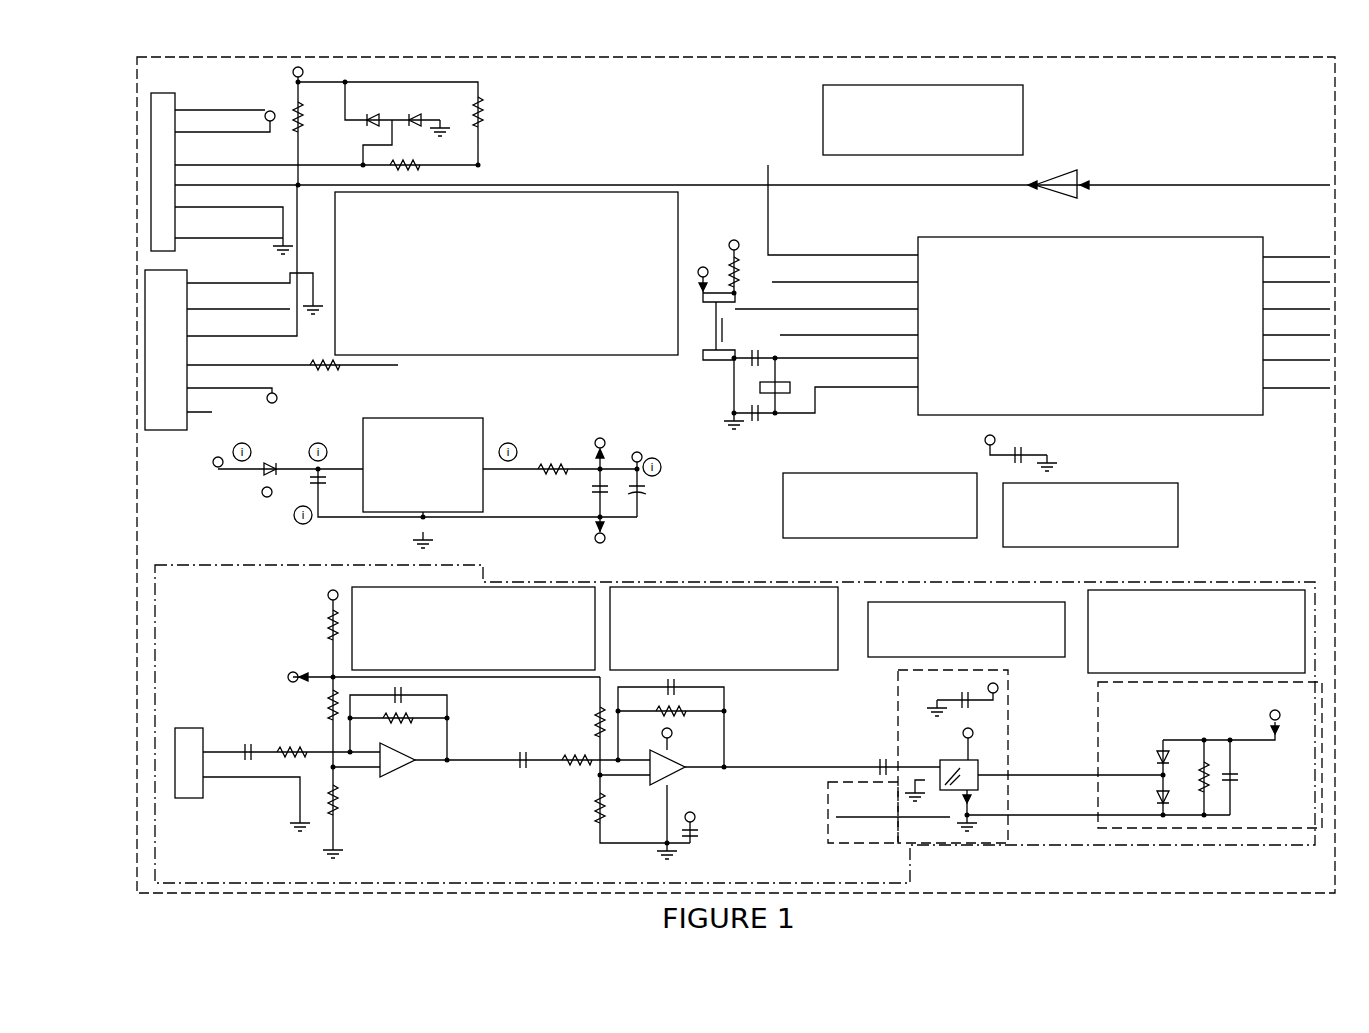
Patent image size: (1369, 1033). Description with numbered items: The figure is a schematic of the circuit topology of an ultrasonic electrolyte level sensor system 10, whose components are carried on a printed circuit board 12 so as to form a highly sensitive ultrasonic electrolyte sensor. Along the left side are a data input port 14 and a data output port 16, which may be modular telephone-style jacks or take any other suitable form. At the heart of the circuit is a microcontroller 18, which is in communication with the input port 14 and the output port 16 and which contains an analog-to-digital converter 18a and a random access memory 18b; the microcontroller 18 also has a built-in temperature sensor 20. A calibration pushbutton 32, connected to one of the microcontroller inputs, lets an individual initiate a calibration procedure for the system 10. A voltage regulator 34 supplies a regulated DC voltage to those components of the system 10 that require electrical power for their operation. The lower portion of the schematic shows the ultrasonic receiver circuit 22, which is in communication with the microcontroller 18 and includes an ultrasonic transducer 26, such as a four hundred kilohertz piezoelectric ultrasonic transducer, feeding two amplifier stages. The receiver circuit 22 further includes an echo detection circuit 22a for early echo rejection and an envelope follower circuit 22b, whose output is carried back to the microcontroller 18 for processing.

The ultrasonic electrolyte level sensor system 10 is at (350, 902).
The printed circuit board 12 is at (996, 894).
The data input port 14 is at (157, 96).
The data output port 16 is at (180, 398).
The microcontroller 18 is at (1186, 237).
The analog-to-digital converter 18a is at (925, 390).
The random access memory 18b is at (1137, 375).
The temperature sensor 20 is at (957, 155).
The ultrasonic receiver circuit 22 is at (226, 562).
The echo detection circuit 22a is at (898, 720).
The envelope follower circuit 22b is at (1325, 800).
The ultrasonic transducer 26 is at (183, 752).
The calibration pushbutton 32 is at (716, 333).
The voltage regulator 34 is at (437, 404).